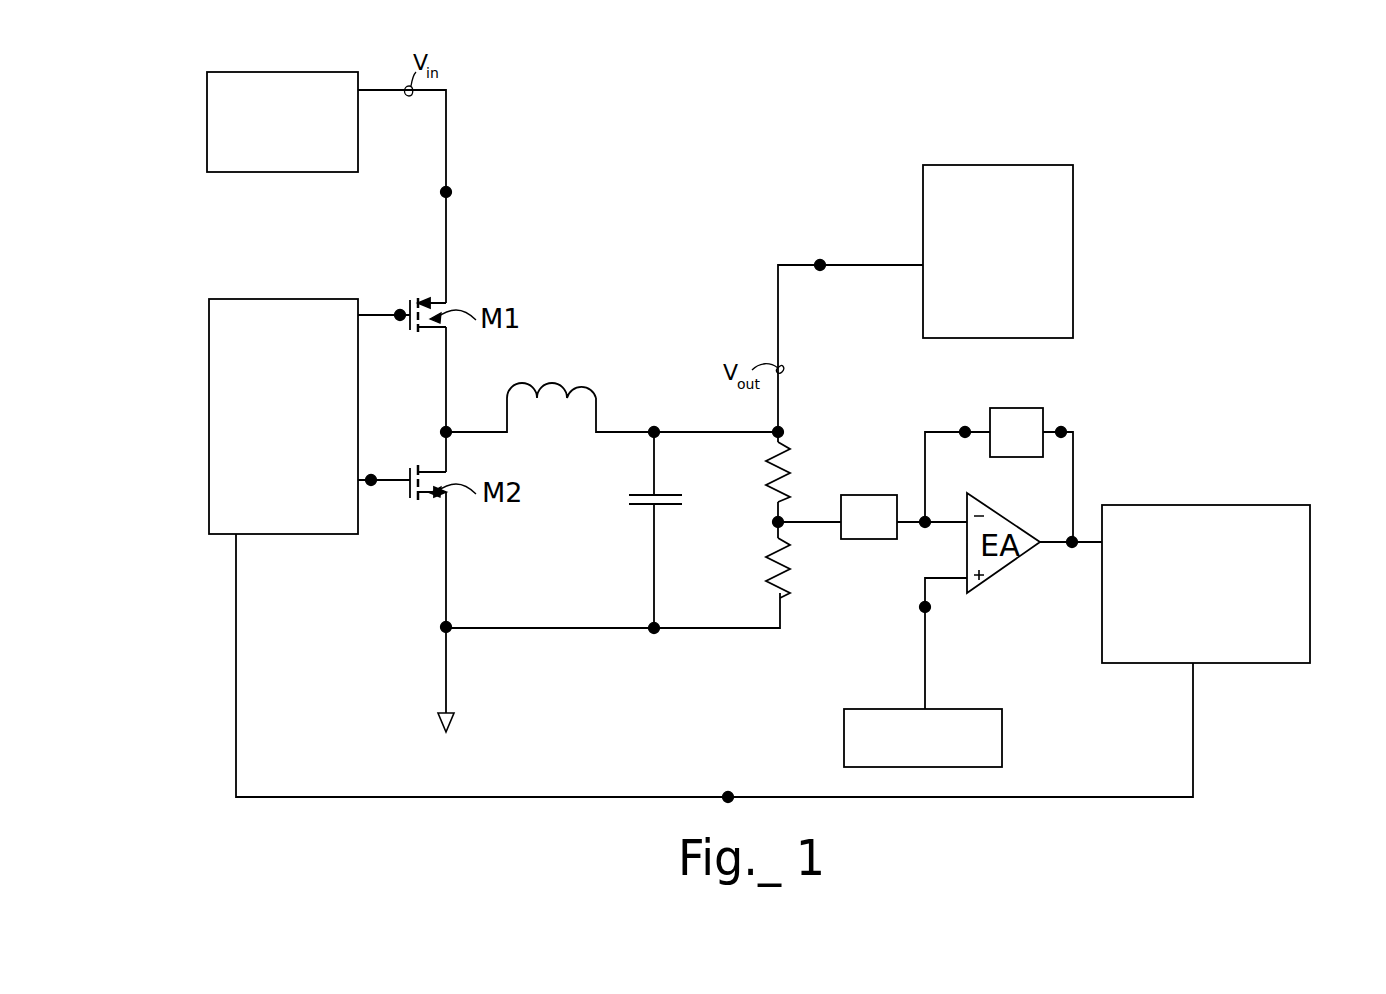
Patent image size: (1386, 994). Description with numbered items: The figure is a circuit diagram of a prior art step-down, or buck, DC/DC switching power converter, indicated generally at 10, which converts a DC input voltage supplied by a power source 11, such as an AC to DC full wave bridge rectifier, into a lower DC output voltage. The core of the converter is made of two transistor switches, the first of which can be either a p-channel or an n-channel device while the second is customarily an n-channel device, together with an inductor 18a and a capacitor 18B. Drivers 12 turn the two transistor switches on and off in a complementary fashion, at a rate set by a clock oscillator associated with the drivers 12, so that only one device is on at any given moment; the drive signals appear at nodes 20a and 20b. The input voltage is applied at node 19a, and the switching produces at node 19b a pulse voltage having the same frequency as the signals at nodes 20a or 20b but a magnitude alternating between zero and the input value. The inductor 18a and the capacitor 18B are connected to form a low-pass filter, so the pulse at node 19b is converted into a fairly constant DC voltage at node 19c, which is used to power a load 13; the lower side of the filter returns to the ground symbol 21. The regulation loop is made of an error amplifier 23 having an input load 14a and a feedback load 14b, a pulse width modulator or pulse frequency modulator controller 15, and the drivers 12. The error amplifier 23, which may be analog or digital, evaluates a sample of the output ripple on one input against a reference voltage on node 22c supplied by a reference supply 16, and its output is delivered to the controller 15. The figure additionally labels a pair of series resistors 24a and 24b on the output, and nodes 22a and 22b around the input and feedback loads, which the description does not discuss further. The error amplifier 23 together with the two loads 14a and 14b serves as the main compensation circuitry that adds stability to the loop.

The voltage regulator system 10 is at (683, 66).
The power source 11 is at (268, 72).
The drivers 12 is at (276, 298).
The load 13 is at (1000, 165).
The input load Z1 14a is at (881, 495).
The feedback load Z2 14b is at (1020, 408).
The PWM or PFM controller 15 is at (1205, 505).
The reference supply 16 is at (1002, 738).
The inductor 18a is at (590, 395).
The capacitor 18B is at (633, 493).
The input node 19a is at (446, 192).
The node 19b is at (446, 432).
The node 19c is at (820, 265).
The node 20a is at (400, 315).
The node 20b is at (371, 480).
The ground 21 is at (455, 716).
The feedback node 22a is at (1061, 432).
The inverting input node of error amplifier 22b is at (965, 432).
The node 22c is at (925, 607).
The error amplifier 23 is at (1028, 555).
The feedback resistor R1 24a is at (765, 482).
The feedback resistor R2 24b is at (790, 590).